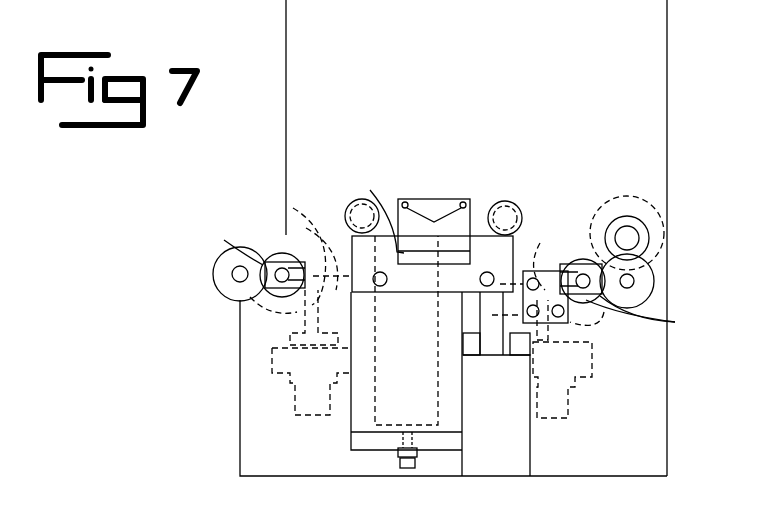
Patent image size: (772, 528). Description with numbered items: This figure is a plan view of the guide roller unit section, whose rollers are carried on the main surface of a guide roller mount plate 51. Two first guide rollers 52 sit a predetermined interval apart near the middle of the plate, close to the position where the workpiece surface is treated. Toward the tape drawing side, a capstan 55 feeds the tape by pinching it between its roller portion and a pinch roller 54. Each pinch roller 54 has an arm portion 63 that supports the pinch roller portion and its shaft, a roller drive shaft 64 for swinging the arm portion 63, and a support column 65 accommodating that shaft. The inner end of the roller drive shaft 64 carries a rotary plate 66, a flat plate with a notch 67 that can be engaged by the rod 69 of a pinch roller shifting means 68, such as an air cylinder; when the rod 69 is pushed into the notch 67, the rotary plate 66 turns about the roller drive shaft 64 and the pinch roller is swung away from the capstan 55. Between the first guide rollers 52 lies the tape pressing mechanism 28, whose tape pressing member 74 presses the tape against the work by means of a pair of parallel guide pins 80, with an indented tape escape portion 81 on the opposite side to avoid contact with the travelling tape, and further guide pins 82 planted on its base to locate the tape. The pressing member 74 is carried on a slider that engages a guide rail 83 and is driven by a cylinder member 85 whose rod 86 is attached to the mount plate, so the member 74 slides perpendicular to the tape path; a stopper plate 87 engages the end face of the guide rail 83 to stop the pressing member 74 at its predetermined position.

The guide roller mount plate 51 is at (643, 14).
The tape pressing mechanism 28 is at (433, 225).
The tape pressing member 74 is at (450, 205).
The guide pins 80 is at (404, 203).
The indented tape escape portion 81 is at (378, 210).
The first guide rollers 52 is at (355, 204).
The capstan 55 is at (626, 236).
The pinch rollers 54 is at (214, 273).
The arm portion 63 is at (268, 258).
The roller drive shaft 64 is at (453, 283).
The support column 65 is at (286, 260).
The rotary plate 66 is at (292, 240).
The notch 67 is at (326, 275).
The pinch roller shifting means 68 is at (272, 362).
The rod 69 is at (305, 313).
The guide pins 82 is at (381, 287).
The guide rail 83 is at (372, 390).
The cylinder member 85 is at (492, 460).
The rod 86 is at (488, 292).
The stopper plate 87 is at (371, 440).